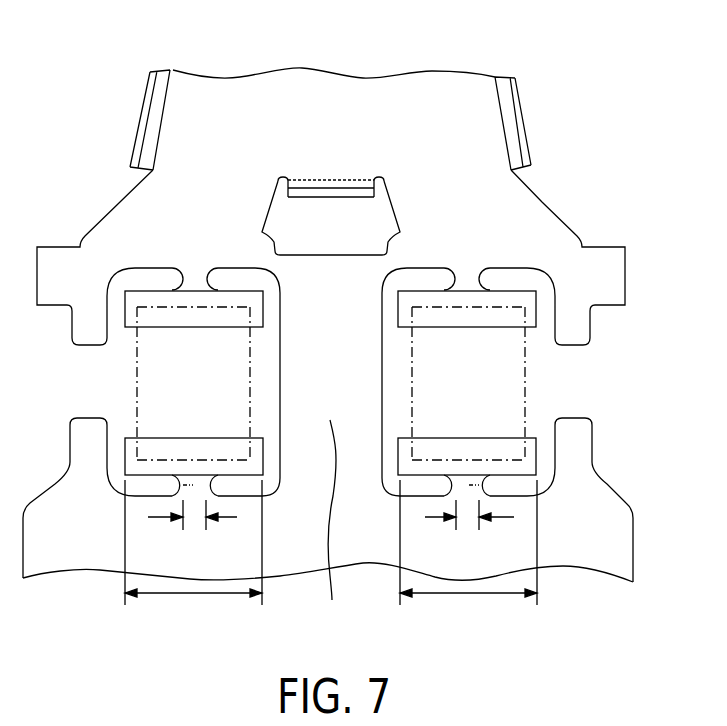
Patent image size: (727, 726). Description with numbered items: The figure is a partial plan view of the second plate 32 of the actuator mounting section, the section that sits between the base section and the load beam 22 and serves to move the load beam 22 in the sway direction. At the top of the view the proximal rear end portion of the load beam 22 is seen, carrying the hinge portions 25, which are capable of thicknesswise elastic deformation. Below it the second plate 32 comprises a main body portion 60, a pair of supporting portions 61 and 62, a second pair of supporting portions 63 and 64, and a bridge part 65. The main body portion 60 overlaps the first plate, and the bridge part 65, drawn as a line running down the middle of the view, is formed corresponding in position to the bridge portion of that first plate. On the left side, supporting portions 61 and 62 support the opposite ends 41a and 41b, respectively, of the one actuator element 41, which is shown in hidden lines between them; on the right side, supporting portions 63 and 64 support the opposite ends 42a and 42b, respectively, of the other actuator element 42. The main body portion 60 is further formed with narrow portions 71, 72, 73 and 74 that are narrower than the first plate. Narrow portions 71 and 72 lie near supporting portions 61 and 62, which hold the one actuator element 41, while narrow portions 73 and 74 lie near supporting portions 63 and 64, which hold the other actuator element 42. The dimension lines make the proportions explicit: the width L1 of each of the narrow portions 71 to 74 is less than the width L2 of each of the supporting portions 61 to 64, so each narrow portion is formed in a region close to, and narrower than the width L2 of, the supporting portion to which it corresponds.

The load beam 22 is at (371, 87).
The hinge portions 25 is at (120, 202).
The second plate 32 is at (635, 526).
The actuator element 41 is at (135, 383).
The end of actuator element 41a is at (167, 307).
The end of actuator element 41b is at (160, 463).
The actuator element 42 is at (526, 383).
The end of actuator element 42a is at (505, 307).
The end of actuator element 42b is at (483, 470).
The main body portion 60 is at (580, 556).
The supporting portion 61 is at (222, 320).
The supporting portion 62 is at (158, 446).
The supporting portion 63 is at (495, 320).
The supporting portion 64 is at (443, 451).
The bridge part 65 is at (340, 521).
The narrow portion 71 is at (193, 277).
The narrow portion 72 is at (182, 486).
The narrow portion 73 is at (470, 277).
The narrow portion 74 is at (470, 486).
The width of narrow portion L1 is at (467, 521).
The width of supporting portion L2 is at (467, 596).